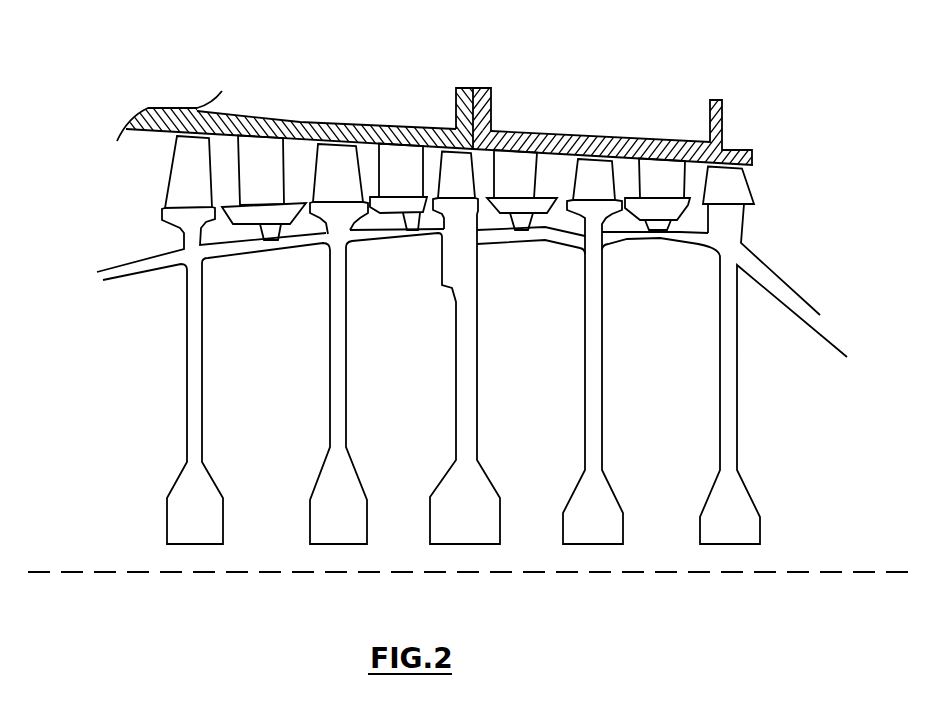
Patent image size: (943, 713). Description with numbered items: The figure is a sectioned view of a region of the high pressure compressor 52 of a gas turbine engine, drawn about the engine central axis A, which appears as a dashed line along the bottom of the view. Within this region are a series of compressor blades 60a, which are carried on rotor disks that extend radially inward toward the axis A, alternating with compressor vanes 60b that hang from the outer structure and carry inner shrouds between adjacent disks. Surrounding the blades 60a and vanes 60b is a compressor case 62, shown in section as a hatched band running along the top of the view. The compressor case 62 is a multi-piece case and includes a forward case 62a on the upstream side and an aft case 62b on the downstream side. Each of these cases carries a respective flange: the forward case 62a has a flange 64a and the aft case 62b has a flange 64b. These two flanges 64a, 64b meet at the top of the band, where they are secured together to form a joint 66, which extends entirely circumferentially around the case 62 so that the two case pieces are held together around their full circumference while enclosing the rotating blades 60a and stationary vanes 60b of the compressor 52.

The high pressure compressor 52 is at (472, 298).
The compressor blades 60a is at (366, 162).
The compressor vanes 60b is at (425, 166).
The compressor case 62 is at (437, 96).
The forward case 62a is at (322, 125).
The aft case 62b is at (587, 137).
The flange 64a is at (456, 92).
The flange 64b is at (489, 88).
The joint 66 is at (437, 96).
The engine central axis A is at (90, 572).